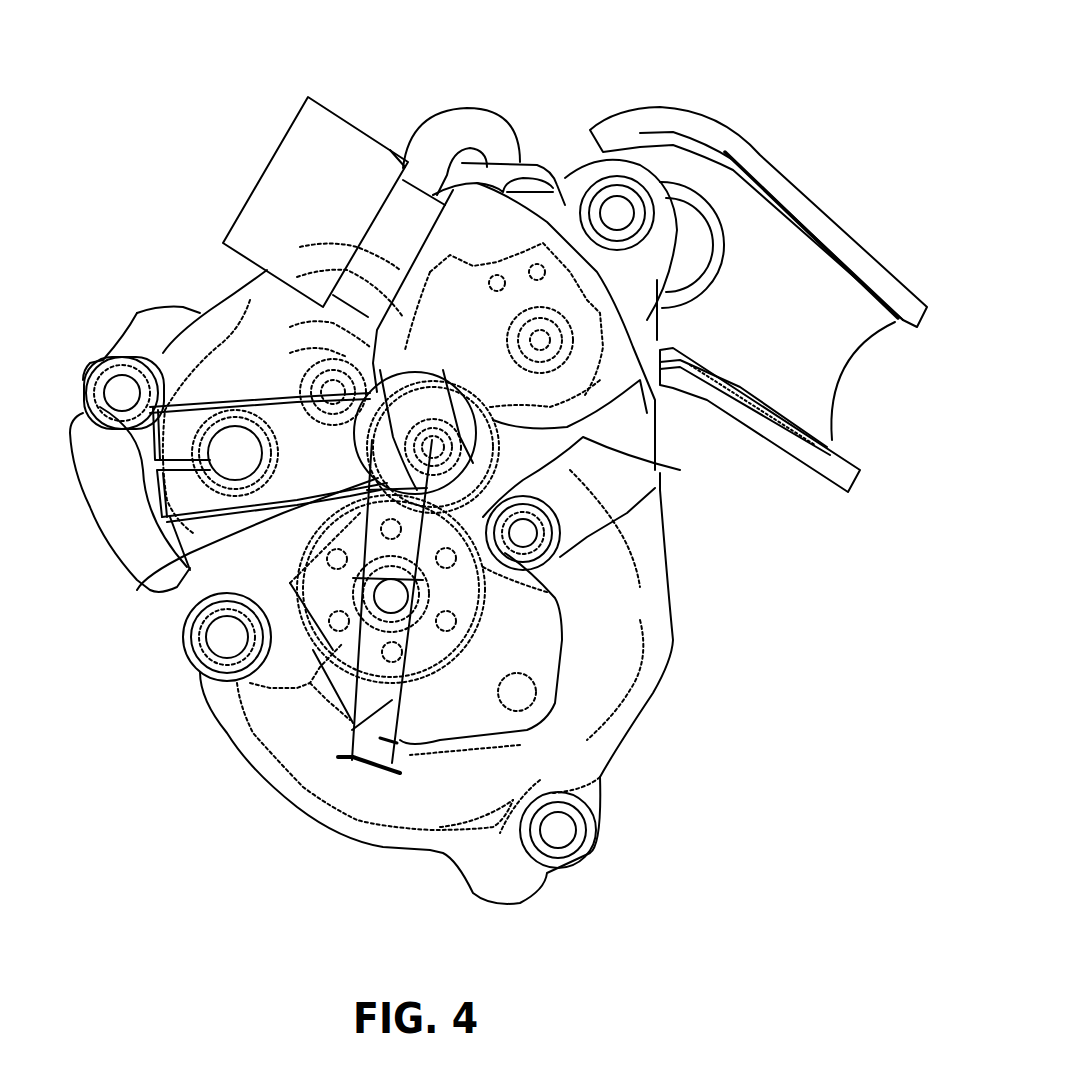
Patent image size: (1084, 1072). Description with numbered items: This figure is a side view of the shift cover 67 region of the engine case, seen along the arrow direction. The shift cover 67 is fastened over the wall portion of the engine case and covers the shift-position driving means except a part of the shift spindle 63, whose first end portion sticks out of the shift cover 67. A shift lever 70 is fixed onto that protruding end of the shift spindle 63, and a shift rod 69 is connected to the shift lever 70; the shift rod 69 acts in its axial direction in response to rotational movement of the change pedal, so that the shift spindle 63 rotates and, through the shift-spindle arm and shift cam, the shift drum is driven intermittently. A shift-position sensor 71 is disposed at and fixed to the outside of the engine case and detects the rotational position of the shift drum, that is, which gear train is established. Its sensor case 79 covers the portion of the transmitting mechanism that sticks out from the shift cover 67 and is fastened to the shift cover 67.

The shift spindle 63 is at (235, 452).
The shift cover 67 is at (635, 610).
The shift rod 69 is at (395, 742).
The shift lever 70 is at (137, 590).
The shift-position sensor 71 is at (557, 214).
The sensor case 79 is at (680, 470).